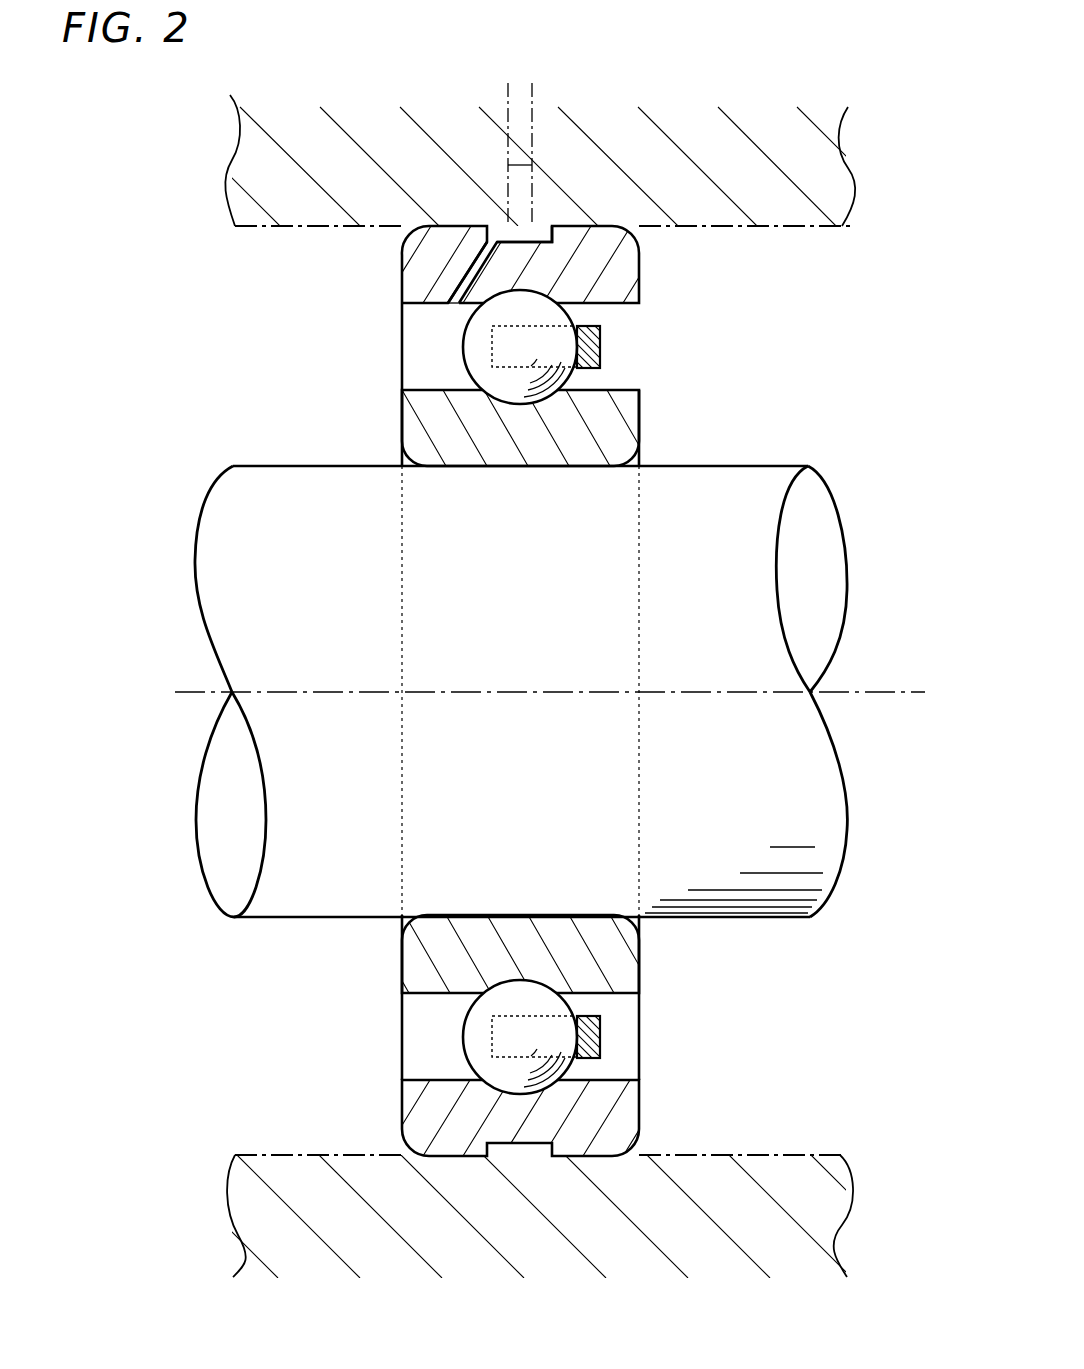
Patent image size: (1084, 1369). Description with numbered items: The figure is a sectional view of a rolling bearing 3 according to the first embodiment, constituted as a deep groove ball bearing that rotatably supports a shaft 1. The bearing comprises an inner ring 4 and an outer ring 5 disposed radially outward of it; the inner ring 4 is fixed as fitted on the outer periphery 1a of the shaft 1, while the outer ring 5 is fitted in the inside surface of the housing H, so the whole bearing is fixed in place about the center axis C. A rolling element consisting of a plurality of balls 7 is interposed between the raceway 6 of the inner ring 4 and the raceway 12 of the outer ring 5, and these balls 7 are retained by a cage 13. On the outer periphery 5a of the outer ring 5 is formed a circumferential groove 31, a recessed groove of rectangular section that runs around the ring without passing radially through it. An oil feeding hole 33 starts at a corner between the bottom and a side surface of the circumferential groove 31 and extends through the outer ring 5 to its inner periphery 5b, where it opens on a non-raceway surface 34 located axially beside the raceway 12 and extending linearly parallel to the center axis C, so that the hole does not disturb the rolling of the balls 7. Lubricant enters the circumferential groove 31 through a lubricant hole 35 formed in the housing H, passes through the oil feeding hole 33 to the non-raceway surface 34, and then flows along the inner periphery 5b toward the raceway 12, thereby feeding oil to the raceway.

The shaft 1 is at (735, 466).
The outer periphery of the shaft 1a is at (735, 918).
The rolling bearing 3 is at (402, 1118).
The inner ring 4 is at (641, 420).
The outer ring 5 is at (641, 278).
The outer periphery of the outer ring 5a is at (458, 226).
The inner periphery of the outer ring 5b is at (402, 325).
The raceway of the inner ring 6 is at (518, 982).
The balls 7 is at (465, 1042).
The raceway of the outer ring 12 is at (570, 1066).
The cage 13 is at (603, 1045).
The circumferential groove 31 is at (541, 232).
The oil feeding hole 33 is at (468, 276).
The non-raceway surface 34 is at (440, 307).
The lubricant hole 35 is at (533, 163).
The center axis C is at (862, 692).
The housing H is at (804, 1156).